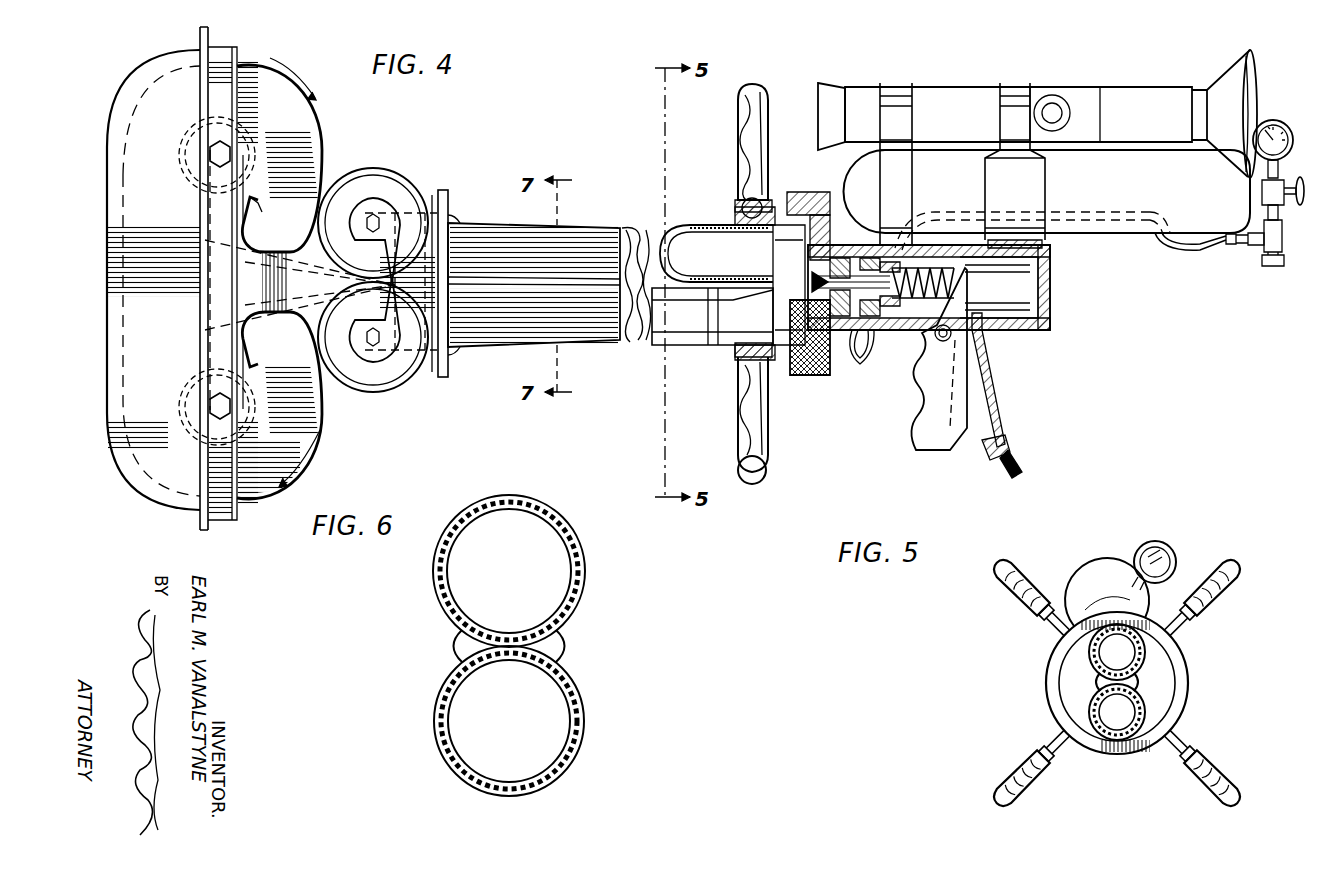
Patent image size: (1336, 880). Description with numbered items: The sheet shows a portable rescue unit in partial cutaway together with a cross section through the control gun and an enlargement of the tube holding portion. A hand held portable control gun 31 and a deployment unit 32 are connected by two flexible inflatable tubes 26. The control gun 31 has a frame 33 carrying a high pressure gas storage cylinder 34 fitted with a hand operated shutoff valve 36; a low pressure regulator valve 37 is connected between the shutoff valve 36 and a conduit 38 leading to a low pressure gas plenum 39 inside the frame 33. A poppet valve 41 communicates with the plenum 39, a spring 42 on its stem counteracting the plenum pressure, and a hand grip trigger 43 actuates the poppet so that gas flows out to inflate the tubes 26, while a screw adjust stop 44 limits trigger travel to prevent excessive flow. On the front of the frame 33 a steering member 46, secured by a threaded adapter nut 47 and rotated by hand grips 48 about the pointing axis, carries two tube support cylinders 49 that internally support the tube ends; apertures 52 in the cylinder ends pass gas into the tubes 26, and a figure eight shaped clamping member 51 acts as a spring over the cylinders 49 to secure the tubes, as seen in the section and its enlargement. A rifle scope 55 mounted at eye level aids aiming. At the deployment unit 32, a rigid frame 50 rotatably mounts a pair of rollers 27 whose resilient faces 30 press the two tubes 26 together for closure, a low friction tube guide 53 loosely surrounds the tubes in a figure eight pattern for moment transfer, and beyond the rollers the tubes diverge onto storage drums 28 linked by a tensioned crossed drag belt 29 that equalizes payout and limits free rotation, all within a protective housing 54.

In FIG. 4, the inflatable tubes 26 is at (270, 262).
In FIG. 6, the inflatable tubes 26 is at (455, 600).
In FIG. 4, the rollers 27 is at (373, 280).
In FIG. 4, the storage drums 28 is at (318, 120).
In FIG. 4, the crossed drag belt 29 is at (266, 210).
In FIG. 4, the resilient faces 30 is at (441, 192).
In FIG. 4, the control gun 31 is at (1083, 327).
In FIG. 5, the control gun 31 is at (1135, 526).
In FIG. 4, the deployment unit 32 is at (360, 165).
In FIG. 4, the frame 33 is at (1052, 262).
In FIG. 4, the gas storage cylinder 34 is at (1046, 200).
In FIG. 5, the gas storage cylinder 34 is at (1098, 572).
In FIG. 4, the shutoff valve 36 is at (1306, 198).
In FIG. 4, the regulator valve 37 is at (1284, 236).
In FIG. 4, the conduit 38 is at (1180, 250).
In FIG. 4, the low pressure gas plenum 39 is at (875, 250).
In FIG. 4, the poppet valve 41 is at (812, 283).
In FIG. 4, the spring 42 is at (930, 300).
In FIG. 4, the hand grip trigger 43 is at (920, 425).
In FIG. 4, the screw adjust stop 44 is at (1022, 470).
In FIG. 4, the steering member 46 is at (738, 205).
In FIG. 5, the steering member 46 is at (1046, 660).
In FIG. 4, the threaded adapter nut 47 is at (788, 195).
In FIG. 4, the hand grips 48 is at (764, 478).
In FIG. 5, the hand grips 48 is at (1222, 597).
In FIG. 4, the tube support cylinders 49 is at (710, 290).
In FIG. 6, the tube support cylinders 49 is at (456, 657).
In FIG. 5, the tube support cylinders 49 is at (1098, 680).
In FIG. 4, the rigid frame 50 is at (386, 280).
In FIG. 4, the clamping member 51 is at (720, 222).
In FIG. 6, the clamping member 51 is at (588, 698).
In FIG. 5, the clamping member 51 is at (1145, 700).
In FIG. 4, the apertures 52 is at (670, 252).
In FIG. 4, the tube guide 53 is at (485, 235).
In FIG. 4, the protective housing 54 is at (190, 492).
In FIG. 4, the rifle scope 55 is at (1150, 102).
In FIG. 5, the rifle scope 55 is at (1176, 560).